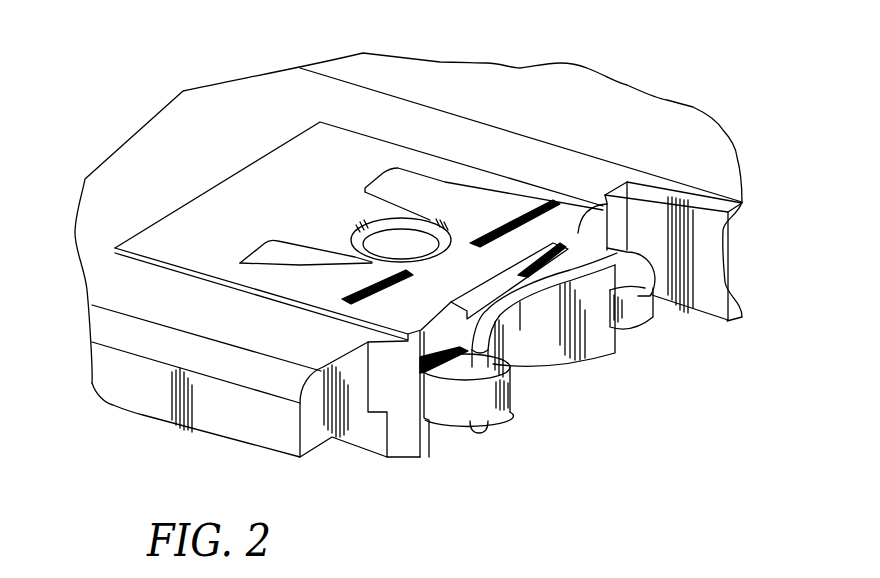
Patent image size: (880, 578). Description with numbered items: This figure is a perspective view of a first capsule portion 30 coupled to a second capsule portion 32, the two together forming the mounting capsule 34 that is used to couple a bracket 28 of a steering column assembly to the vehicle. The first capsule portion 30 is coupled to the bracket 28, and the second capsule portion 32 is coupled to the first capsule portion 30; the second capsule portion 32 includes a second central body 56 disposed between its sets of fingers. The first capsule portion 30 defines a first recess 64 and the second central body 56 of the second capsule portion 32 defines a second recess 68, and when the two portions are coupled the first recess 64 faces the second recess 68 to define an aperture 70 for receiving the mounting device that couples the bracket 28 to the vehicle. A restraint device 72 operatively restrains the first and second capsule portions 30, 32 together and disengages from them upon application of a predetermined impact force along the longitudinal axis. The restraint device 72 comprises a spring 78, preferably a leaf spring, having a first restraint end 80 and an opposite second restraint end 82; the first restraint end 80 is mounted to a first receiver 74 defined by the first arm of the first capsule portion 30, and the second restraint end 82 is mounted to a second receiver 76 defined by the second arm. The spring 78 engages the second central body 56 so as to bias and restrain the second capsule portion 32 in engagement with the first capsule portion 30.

The bracket 28 is at (157, 420).
The first capsule portion 30 is at (183, 245).
The second capsule portion 32 is at (610, 206).
The mounting capsule 34 is at (477, 447).
The second central body 56 is at (469, 262).
The first recess 64 is at (408, 230).
The second recess 68 is at (418, 236).
The aperture 70 is at (355, 228).
The restraint device 72 is at (553, 390).
The first receiver 74 is at (645, 315).
The second receiver 76 is at (510, 410).
The spring 78 is at (602, 362).
The first restraint end 80 is at (645, 295).
The second restraint end 82 is at (513, 375).